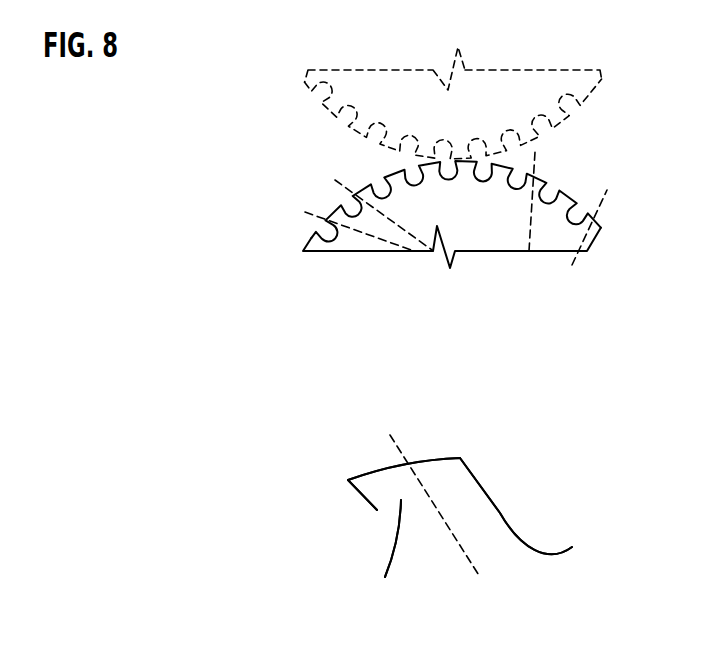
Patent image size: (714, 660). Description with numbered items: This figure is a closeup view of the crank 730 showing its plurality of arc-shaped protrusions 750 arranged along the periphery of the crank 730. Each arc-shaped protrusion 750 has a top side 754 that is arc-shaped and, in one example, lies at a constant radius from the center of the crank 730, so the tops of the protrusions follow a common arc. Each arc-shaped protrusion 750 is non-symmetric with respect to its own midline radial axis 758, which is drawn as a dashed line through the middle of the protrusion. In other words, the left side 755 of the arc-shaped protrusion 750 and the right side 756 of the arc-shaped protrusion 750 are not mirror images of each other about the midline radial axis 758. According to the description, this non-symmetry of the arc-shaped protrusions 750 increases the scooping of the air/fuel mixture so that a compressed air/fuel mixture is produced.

The crank 730 is at (495, 223).
The arc-shaped protrusion 750 is at (382, 172).
The top side 754 is at (383, 470).
The left side 755 is at (399, 500).
The right side 756 is at (488, 525).
The midline radial axis 758 is at (412, 257).